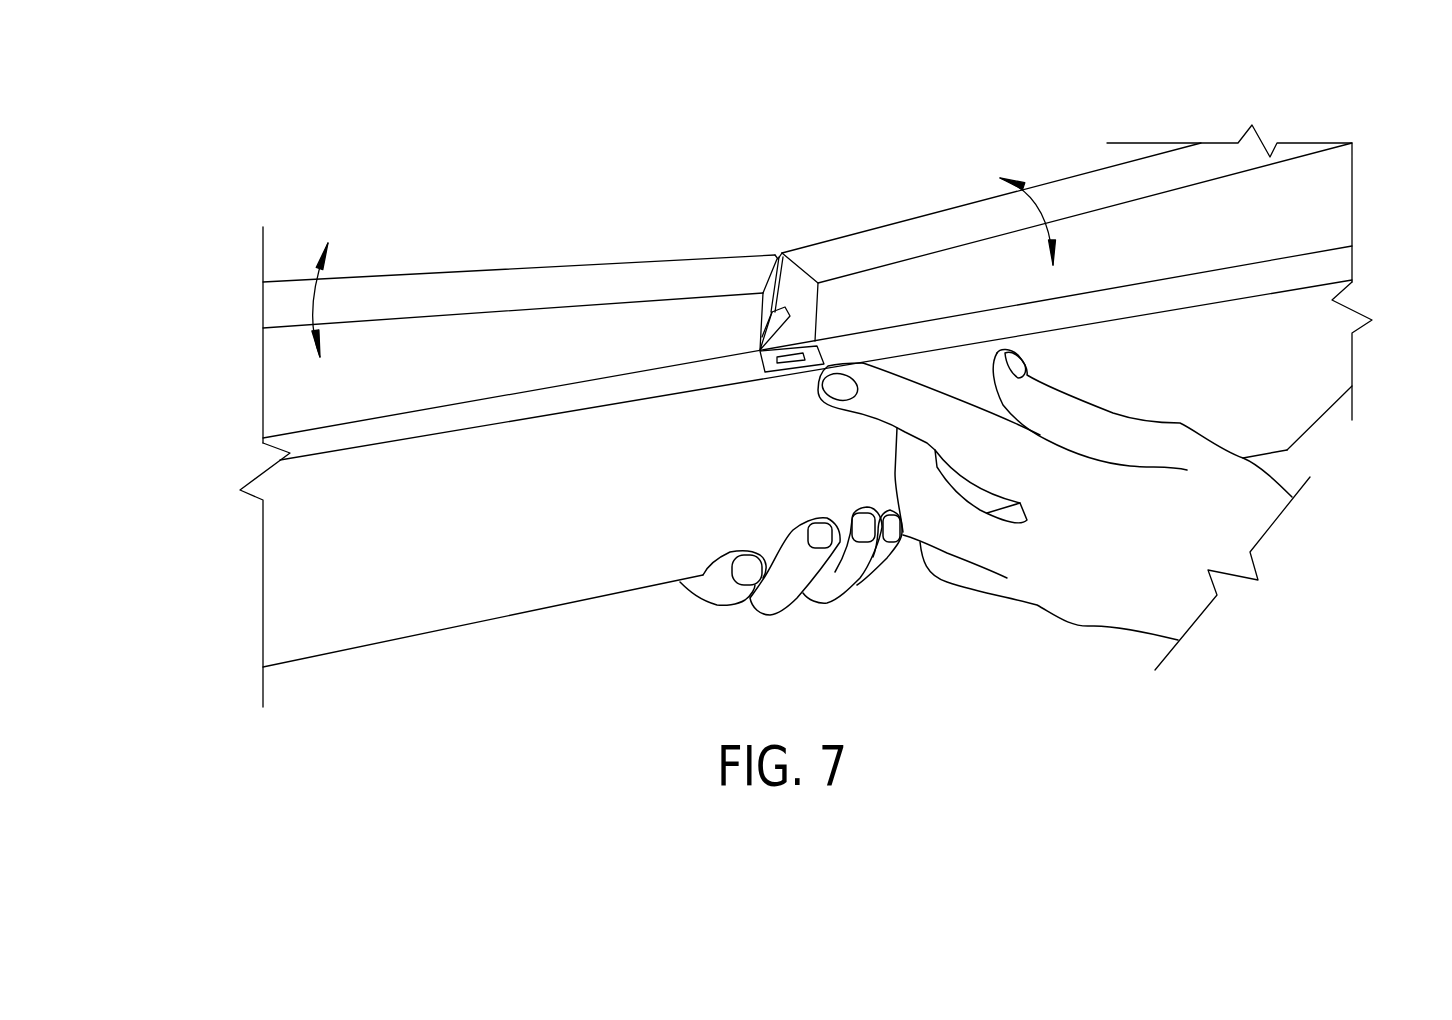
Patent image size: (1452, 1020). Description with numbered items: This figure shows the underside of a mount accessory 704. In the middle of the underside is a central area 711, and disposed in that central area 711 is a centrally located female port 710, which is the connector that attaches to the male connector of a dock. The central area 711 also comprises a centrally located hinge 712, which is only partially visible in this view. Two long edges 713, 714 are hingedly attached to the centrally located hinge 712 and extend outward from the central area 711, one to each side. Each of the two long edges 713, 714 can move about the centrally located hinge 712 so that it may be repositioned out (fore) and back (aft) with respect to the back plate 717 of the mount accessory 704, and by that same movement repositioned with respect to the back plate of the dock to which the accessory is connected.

The mount accessory 704 is at (505, 198).
The female port 710 is at (790, 375).
The central area 711 is at (772, 247).
The centrally located hinge 712 is at (782, 300).
The long edge 713 is at (287, 377).
The long edge 714 is at (1285, 218).
The back plate 717 is at (592, 570).